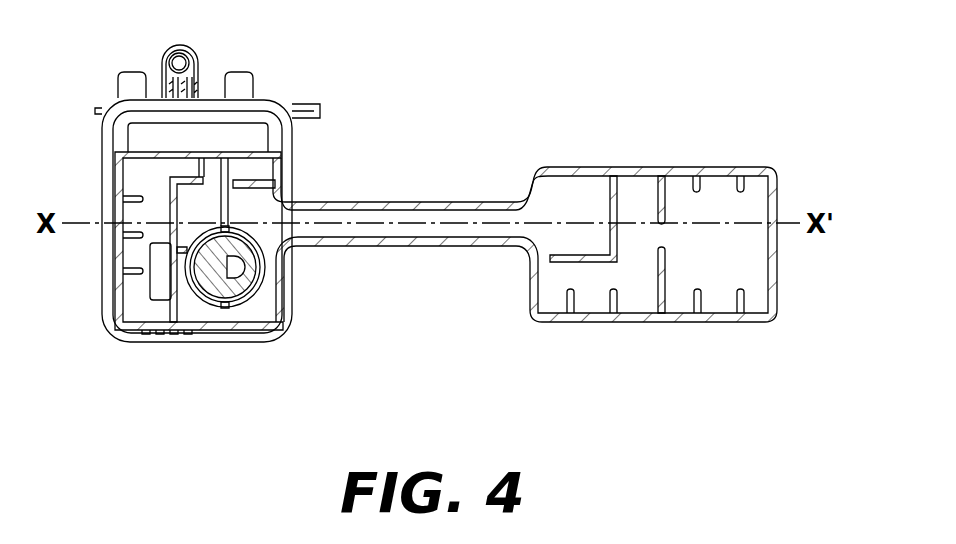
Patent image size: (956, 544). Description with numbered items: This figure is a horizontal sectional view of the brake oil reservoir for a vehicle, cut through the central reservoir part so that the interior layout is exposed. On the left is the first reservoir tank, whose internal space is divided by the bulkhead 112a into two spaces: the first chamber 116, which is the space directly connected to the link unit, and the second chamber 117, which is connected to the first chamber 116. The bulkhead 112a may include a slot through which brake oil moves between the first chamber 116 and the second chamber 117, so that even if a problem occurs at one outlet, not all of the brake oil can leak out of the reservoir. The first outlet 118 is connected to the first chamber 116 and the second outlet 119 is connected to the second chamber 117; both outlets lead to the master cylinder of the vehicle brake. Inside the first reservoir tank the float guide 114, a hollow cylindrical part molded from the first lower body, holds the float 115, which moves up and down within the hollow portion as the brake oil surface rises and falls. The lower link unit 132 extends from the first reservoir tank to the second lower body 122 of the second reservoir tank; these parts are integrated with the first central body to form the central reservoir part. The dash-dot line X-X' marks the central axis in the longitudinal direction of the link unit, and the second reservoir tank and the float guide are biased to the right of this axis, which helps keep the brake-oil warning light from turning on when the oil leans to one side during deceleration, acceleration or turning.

The bulkhead 112a is at (170, 296).
The float guide 114 is at (208, 307).
The float 115 is at (240, 307).
The first chamber 116 is at (275, 307).
The second chamber 117 is at (132, 174).
The first outlet 118 is at (243, 72).
The second outlet 119 is at (133, 72).
The second lower body 122 is at (673, 168).
The lower link unit 132 is at (452, 205).